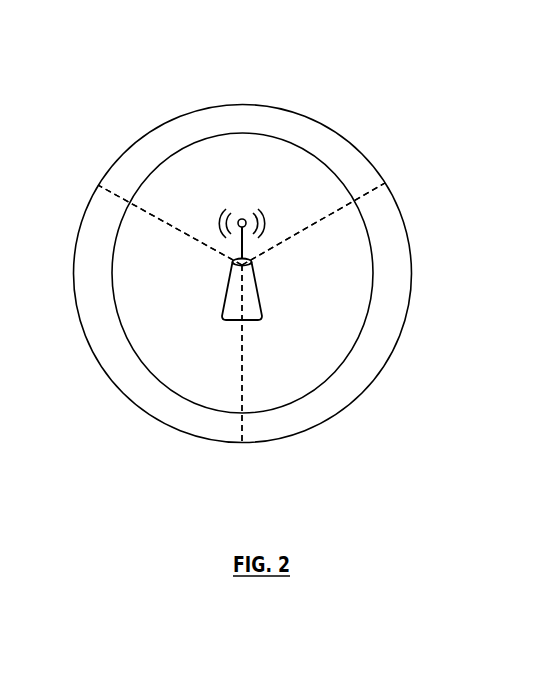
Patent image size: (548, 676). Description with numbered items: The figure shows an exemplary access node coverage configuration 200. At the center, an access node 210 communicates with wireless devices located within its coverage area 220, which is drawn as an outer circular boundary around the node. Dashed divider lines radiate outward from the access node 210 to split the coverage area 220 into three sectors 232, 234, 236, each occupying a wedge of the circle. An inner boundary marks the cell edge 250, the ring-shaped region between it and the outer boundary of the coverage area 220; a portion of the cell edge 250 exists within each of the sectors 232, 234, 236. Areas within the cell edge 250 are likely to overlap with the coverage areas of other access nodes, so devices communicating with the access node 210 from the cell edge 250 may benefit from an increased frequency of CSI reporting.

The wireless communication environment 200 is at (355, 63).
The access node 210 is at (227, 322).
The coverage area 220 is at (137, 407).
The sector 232 is at (313, 312).
The sector 234 is at (170, 313).
The sector 236 is at (241, 219).
The cell edge 250 is at (242, 260).